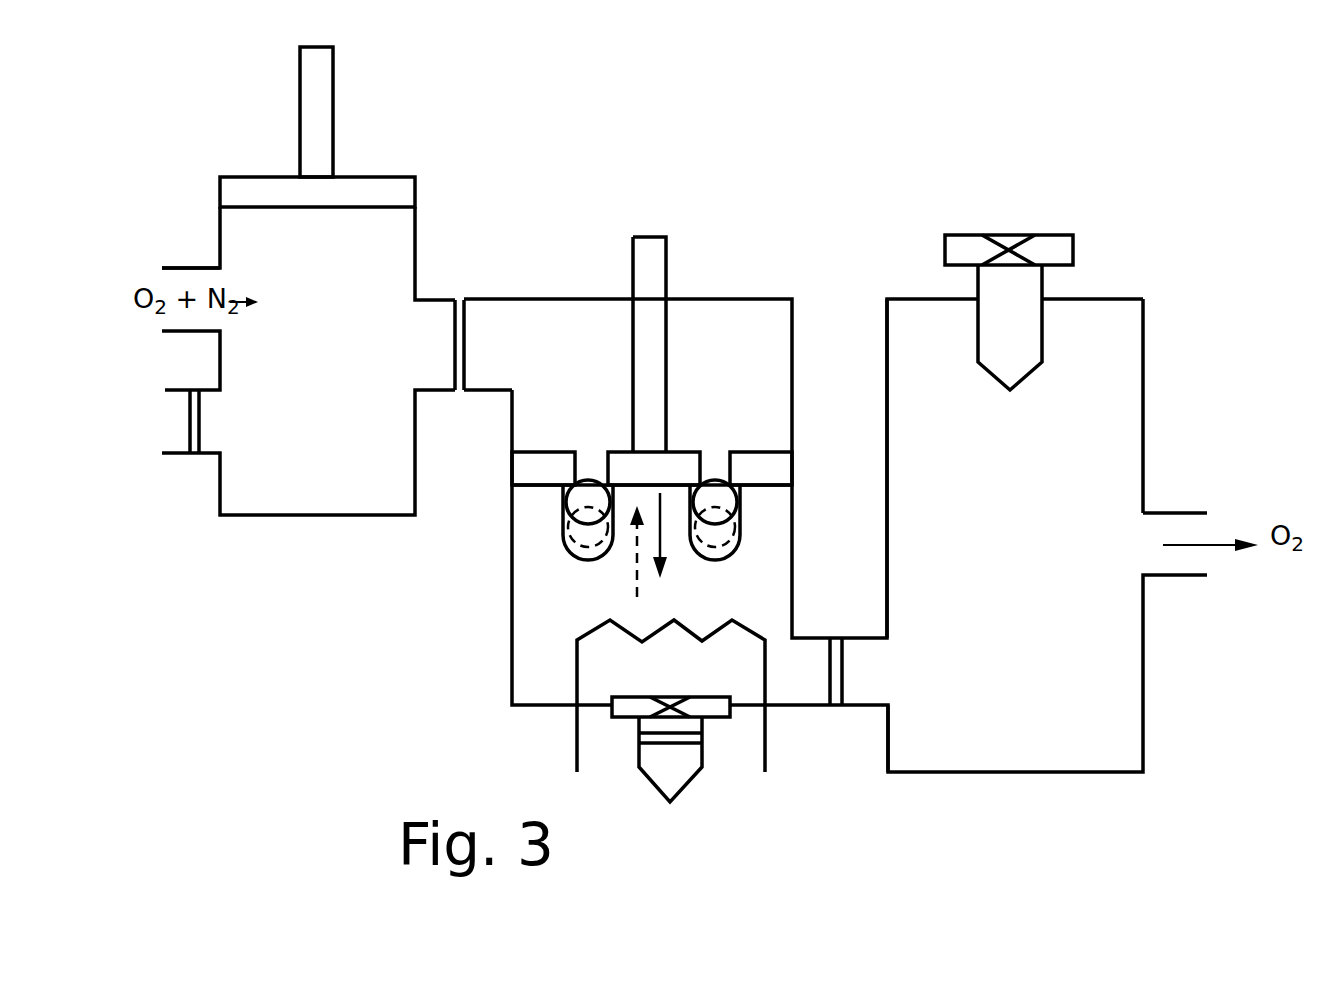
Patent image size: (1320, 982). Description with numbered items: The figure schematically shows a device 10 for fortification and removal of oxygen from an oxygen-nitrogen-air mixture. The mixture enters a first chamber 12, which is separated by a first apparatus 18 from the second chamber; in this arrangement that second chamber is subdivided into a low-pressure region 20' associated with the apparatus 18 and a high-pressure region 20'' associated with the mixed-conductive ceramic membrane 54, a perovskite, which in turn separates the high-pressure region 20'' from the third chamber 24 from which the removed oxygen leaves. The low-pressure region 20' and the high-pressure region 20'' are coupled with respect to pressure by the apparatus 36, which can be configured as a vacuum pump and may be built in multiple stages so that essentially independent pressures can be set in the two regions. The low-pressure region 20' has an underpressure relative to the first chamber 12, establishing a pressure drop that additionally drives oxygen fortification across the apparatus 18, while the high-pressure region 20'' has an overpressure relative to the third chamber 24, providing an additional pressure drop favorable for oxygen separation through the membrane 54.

The device 10 is at (1170, 254).
The first chamber 12 is at (297, 460).
The first apparatus 18 is at (467, 332).
The low-pressure region 20' is at (803, 393).
The high-pressure region 20'' is at (643, 596).
The third chamber 24 is at (1003, 720).
The apparatus for exerting pressure 36 is at (540, 468).
The mixed-conductive ceramic membrane 54 is at (833, 670).